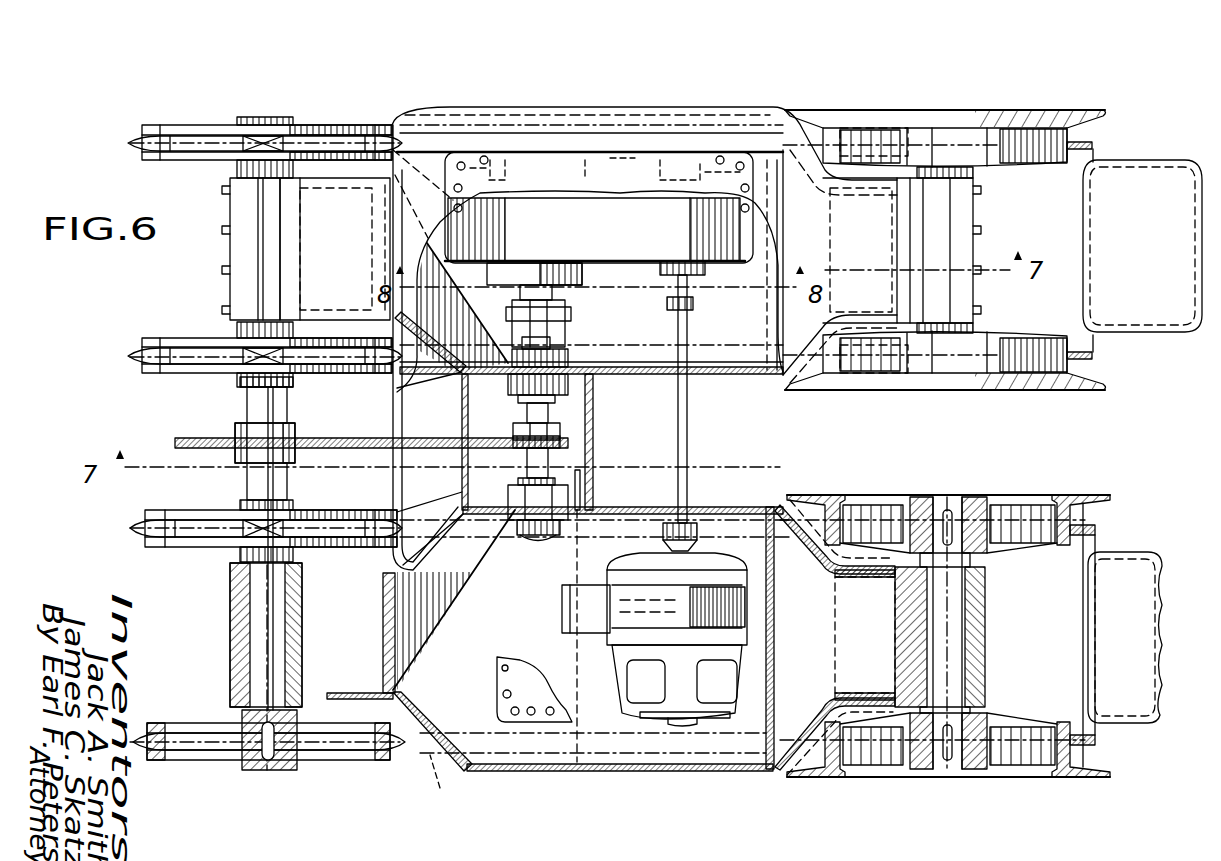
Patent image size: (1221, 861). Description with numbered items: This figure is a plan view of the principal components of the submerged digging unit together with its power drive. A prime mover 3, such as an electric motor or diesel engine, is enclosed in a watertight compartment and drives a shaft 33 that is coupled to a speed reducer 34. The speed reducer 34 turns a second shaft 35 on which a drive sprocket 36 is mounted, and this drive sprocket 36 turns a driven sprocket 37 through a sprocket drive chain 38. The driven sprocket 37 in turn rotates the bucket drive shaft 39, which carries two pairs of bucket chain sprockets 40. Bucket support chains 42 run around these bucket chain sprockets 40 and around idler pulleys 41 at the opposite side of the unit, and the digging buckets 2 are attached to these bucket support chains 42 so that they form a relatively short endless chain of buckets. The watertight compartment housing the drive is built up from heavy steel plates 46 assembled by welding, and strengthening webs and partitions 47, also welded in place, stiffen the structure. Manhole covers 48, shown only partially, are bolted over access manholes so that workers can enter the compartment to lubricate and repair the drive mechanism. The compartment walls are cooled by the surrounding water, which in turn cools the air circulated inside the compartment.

The digging buckets 2 is at (1118, 322).
The prime mover 3 is at (622, 684).
The shaft 33 is at (687, 338).
The speed reducer 34 is at (636, 232).
The shaft 35 is at (563, 338).
The drive sprocket 36 is at (522, 447).
The driven sprocket 37 is at (328, 442).
The sprocket drive chain 38 is at (430, 440).
The bucket drive shaft 39 is at (287, 407).
The bucket chain sprockets 40 is at (152, 356).
The idler pulleys 41 is at (1093, 118).
The bucket support chains 42 is at (449, 784).
The heavy steel plates 46 is at (593, 424).
The strengthening webs and partitions 47 is at (773, 655).
The manhole covers 48 is at (497, 689).